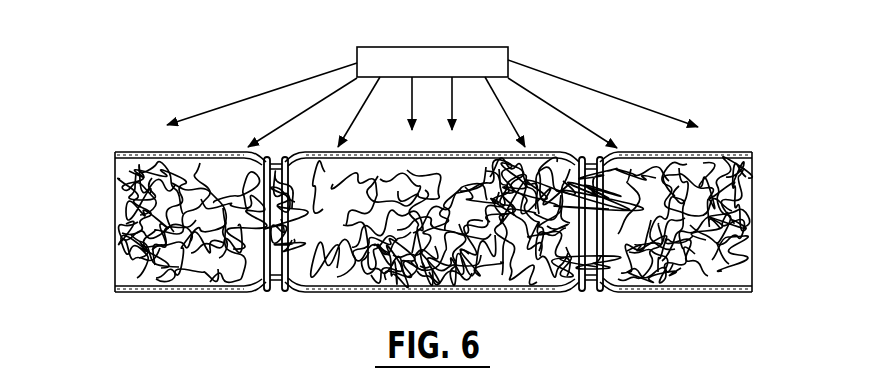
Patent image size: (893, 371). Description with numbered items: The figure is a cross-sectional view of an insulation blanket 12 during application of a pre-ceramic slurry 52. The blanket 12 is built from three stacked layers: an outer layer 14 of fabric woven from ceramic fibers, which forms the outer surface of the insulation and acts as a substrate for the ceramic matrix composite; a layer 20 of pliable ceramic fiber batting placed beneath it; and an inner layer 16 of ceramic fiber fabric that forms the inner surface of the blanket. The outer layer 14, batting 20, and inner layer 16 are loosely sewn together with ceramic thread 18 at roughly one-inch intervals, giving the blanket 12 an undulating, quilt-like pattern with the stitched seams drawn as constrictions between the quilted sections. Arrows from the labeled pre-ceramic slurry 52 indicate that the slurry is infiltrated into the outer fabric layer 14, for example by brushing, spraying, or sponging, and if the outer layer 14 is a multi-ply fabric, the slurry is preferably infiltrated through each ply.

The blanket 12 is at (411, 221).
The outer layer 14 is at (690, 152).
The inner layer 16 is at (700, 292).
The ceramic thread 18 is at (286, 160).
The batting 20 is at (425, 268).
The pre-ceramic slurry 52 is at (478, 47).